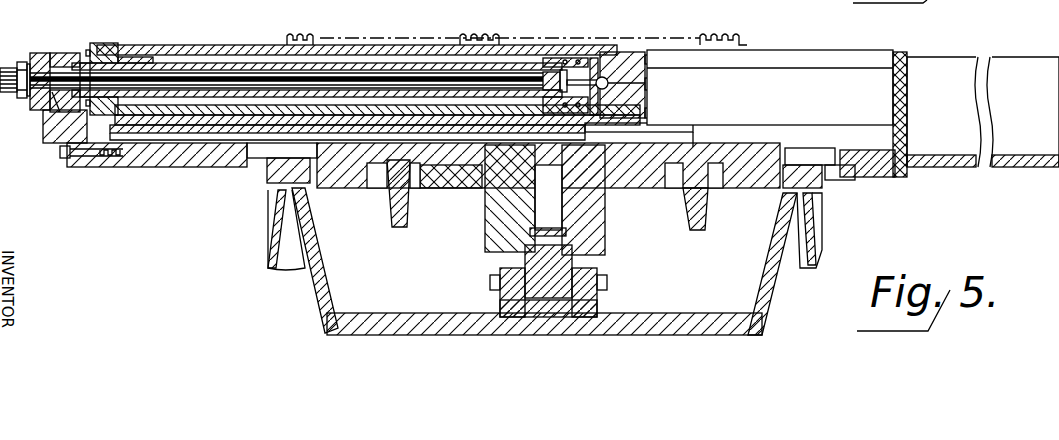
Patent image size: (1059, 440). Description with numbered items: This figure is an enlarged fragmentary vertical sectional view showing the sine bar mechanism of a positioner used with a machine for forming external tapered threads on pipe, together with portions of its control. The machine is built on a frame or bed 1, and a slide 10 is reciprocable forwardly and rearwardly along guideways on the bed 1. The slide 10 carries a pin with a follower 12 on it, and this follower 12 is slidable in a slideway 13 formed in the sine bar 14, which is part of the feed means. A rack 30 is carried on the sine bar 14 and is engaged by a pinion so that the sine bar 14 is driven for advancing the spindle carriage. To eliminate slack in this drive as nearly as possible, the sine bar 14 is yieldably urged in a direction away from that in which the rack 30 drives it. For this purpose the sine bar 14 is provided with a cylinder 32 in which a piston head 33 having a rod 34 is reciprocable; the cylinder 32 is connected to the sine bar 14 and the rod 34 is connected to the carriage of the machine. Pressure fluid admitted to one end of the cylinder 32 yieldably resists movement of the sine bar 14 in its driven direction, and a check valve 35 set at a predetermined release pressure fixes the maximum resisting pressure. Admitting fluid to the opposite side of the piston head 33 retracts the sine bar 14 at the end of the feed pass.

The frame or bed 1 is at (266, 248).
The slide 10 is at (517, 213).
The follower 12 is at (583, 130).
The slideway 13 is at (218, 132).
The sine bar 14 is at (183, 46).
The rack 30 is at (713, 37).
The cylinder 32 is at (263, 52).
The piston head 33 is at (553, 55).
The rod 34 is at (193, 78).
The check valve 35 is at (605, 78).